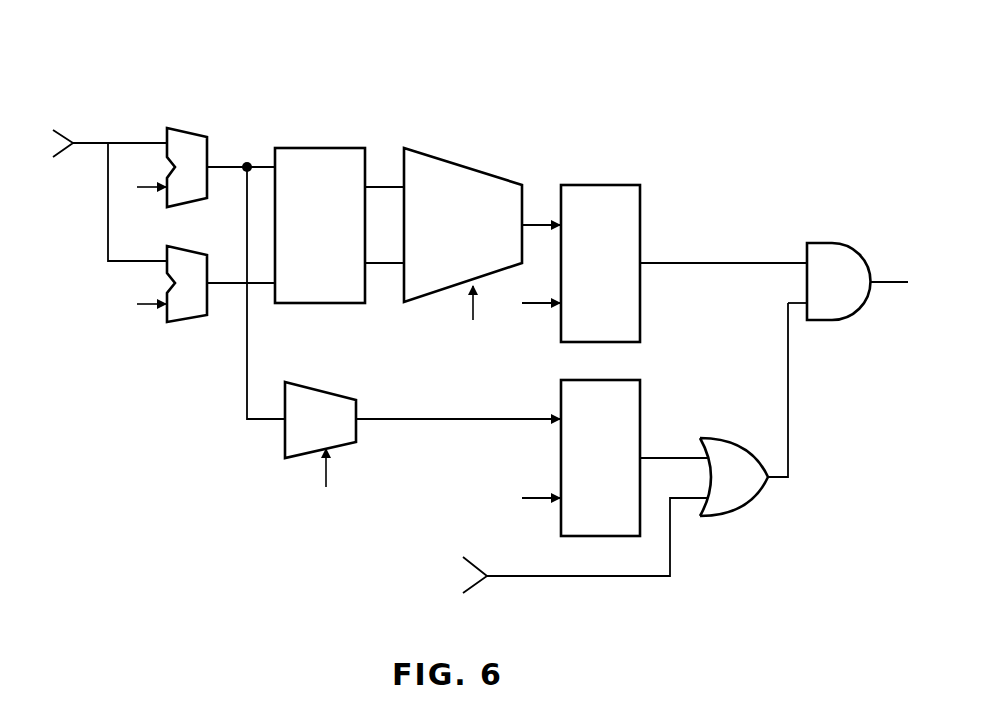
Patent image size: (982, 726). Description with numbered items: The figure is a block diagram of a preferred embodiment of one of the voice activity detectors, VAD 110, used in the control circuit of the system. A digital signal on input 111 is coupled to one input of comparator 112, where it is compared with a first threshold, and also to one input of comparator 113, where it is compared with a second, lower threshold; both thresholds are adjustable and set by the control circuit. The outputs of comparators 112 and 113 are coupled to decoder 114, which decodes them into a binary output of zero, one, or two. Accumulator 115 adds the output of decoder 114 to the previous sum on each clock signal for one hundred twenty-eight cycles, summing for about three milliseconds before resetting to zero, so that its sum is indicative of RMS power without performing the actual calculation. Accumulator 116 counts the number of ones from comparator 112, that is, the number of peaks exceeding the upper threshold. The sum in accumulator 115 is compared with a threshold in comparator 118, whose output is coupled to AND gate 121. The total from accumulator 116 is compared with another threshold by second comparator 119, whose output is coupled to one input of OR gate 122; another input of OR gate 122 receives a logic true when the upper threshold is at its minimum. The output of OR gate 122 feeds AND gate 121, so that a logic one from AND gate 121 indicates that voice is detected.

The VAD 110 is at (674, 101).
The input 111 is at (78, 142).
The comparator 112 is at (187, 132).
The comparator 113 is at (187, 327).
The decoder 114 is at (325, 147).
The accumulator 115 is at (475, 165).
The accumulator 116 is at (345, 398).
The comparator 118 is at (640, 213).
The second comparator 119 is at (640, 399).
The AND gate 121 is at (828, 243).
The OR gate 122 is at (718, 520).